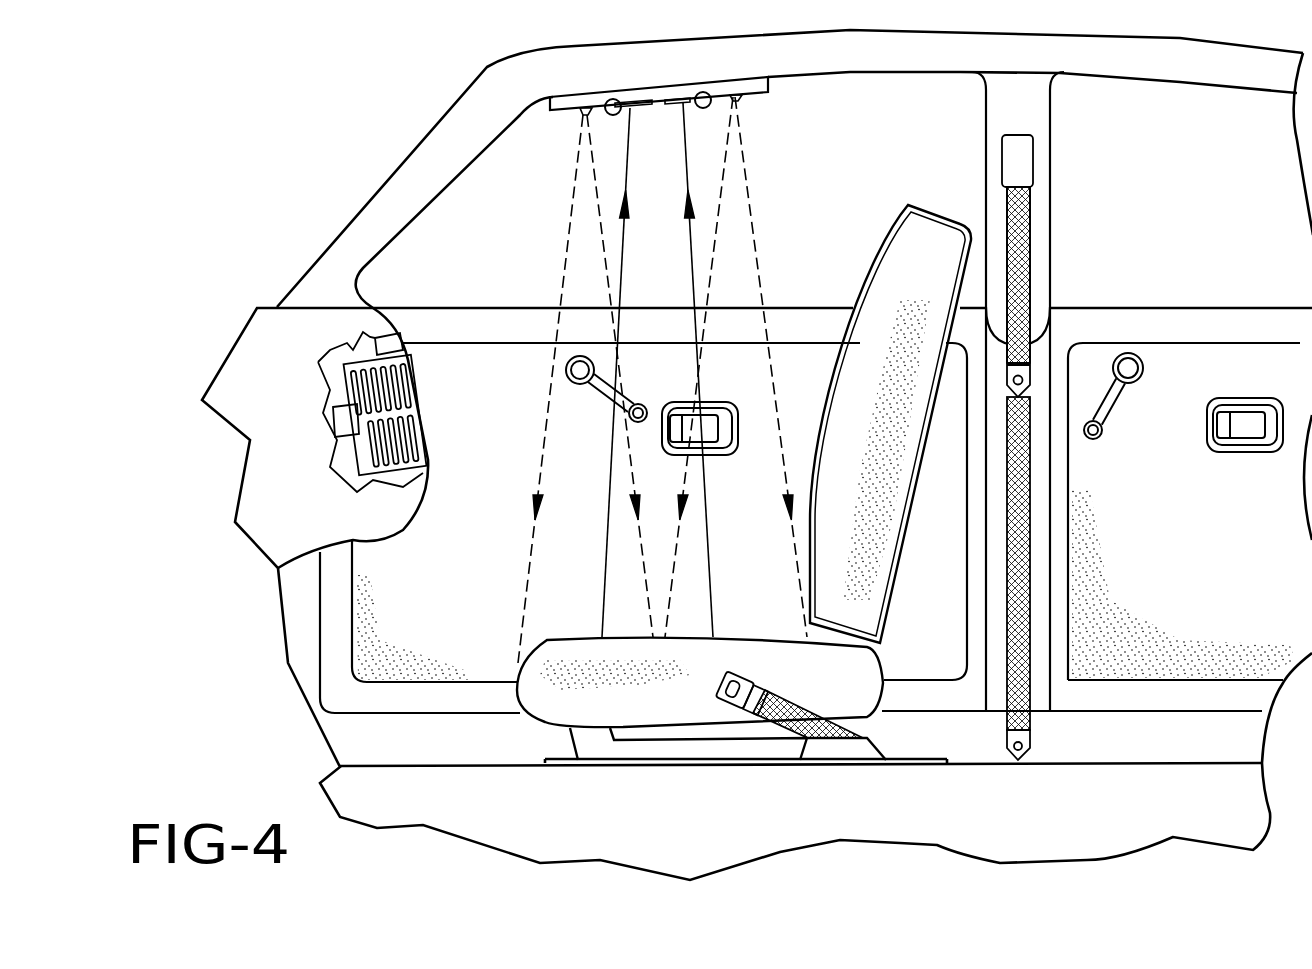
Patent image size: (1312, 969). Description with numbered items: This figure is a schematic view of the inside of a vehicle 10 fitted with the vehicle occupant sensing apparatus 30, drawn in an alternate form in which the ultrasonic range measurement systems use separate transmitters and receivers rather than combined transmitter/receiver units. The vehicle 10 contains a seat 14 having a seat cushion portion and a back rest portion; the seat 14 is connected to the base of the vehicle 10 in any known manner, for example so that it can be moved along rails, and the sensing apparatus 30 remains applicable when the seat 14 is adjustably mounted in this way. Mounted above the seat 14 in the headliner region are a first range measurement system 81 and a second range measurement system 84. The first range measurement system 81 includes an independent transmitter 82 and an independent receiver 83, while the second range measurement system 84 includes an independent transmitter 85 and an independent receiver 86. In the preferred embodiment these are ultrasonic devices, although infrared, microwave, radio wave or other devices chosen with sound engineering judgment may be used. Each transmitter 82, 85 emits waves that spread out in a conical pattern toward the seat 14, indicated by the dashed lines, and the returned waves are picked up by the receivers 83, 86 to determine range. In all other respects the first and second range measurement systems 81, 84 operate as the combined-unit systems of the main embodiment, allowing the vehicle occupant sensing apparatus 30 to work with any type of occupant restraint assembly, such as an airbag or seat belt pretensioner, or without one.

The vehicle 10 is at (200, 180).
The vehicle occupant sensing apparatus 30 is at (325, 197).
The seat 14 is at (948, 268).
The first range measurement system 81 is at (500, 182).
The transmitter 82 is at (580, 110).
The receiver 83 is at (601, 99).
The second range measurement system 84 is at (812, 140).
The transmitter 85 is at (742, 98).
The receiver 86 is at (715, 98).